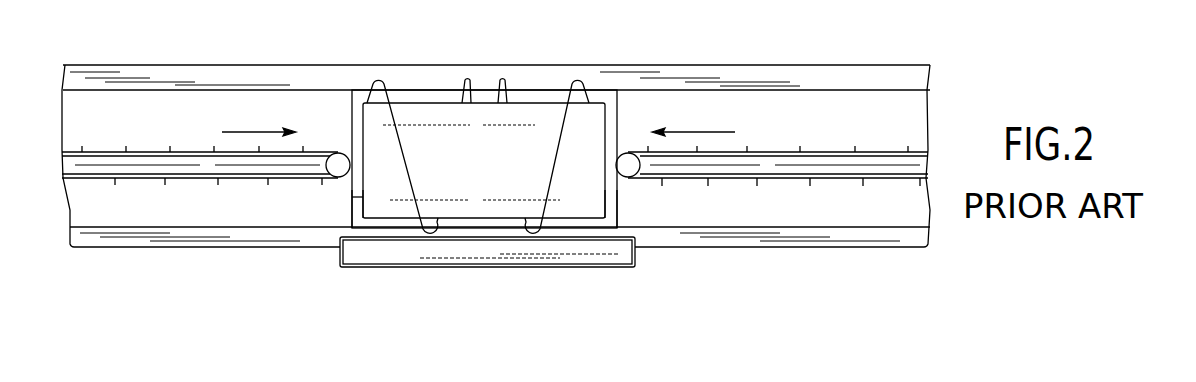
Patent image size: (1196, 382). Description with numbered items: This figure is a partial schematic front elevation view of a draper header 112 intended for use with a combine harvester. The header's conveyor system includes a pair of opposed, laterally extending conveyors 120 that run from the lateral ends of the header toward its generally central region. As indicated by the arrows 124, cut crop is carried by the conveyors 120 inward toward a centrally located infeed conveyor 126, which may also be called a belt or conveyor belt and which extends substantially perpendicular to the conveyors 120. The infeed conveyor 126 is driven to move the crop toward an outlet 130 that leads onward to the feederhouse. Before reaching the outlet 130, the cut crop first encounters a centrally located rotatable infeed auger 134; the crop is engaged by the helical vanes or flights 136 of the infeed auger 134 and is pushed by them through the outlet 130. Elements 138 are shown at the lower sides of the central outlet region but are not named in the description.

The draper header 112 is at (913, 45).
The laterally extending conveyors 120 is at (147, 153).
The arrows 124 is at (245, 132).
The infeed conveyor 126 is at (635, 253).
The outlet 130 is at (611, 92).
The infeed auger 134 is at (502, 177).
The helical vanes or flights 136 is at (379, 77).
The frame side walls 138 is at (363, 197).